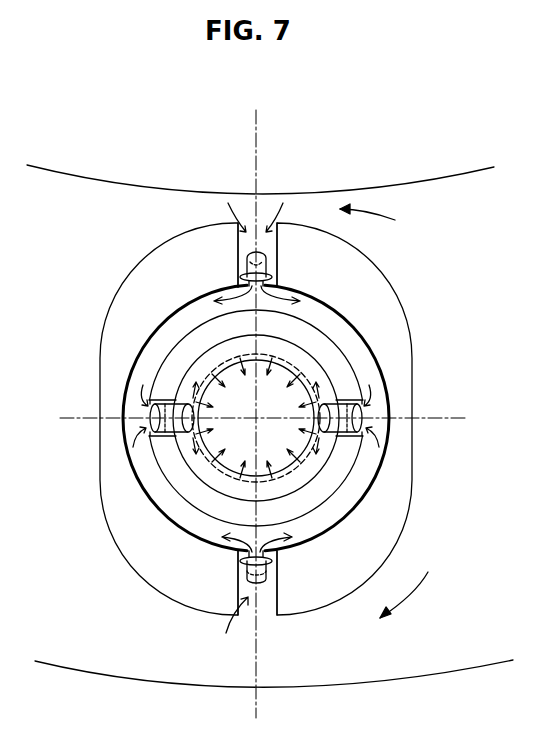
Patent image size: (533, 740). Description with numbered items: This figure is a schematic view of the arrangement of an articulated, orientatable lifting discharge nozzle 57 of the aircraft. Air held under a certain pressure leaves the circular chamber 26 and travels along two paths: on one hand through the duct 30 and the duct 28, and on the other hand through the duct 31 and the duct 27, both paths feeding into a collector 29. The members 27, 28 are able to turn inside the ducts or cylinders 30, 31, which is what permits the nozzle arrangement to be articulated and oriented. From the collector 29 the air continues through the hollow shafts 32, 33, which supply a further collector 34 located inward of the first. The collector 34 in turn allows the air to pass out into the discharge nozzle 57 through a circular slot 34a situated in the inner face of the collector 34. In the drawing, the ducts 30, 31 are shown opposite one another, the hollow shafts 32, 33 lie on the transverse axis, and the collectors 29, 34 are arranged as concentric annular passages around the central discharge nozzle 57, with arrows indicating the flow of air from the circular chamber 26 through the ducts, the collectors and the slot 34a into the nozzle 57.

The circular chamber 26 is at (70, 398).
The duct 27 is at (253, 266).
The duct 28 is at (272, 560).
The collector 29 is at (165, 500).
The duct 30 is at (277, 583).
The duct 31 is at (277, 258).
The hollow shaft 32 is at (174, 430).
The hollow shaft 33 is at (340, 430).
The collector 34 is at (292, 350).
The circular slot 34a is at (262, 353).
The discharge nozzle 57 is at (232, 452).